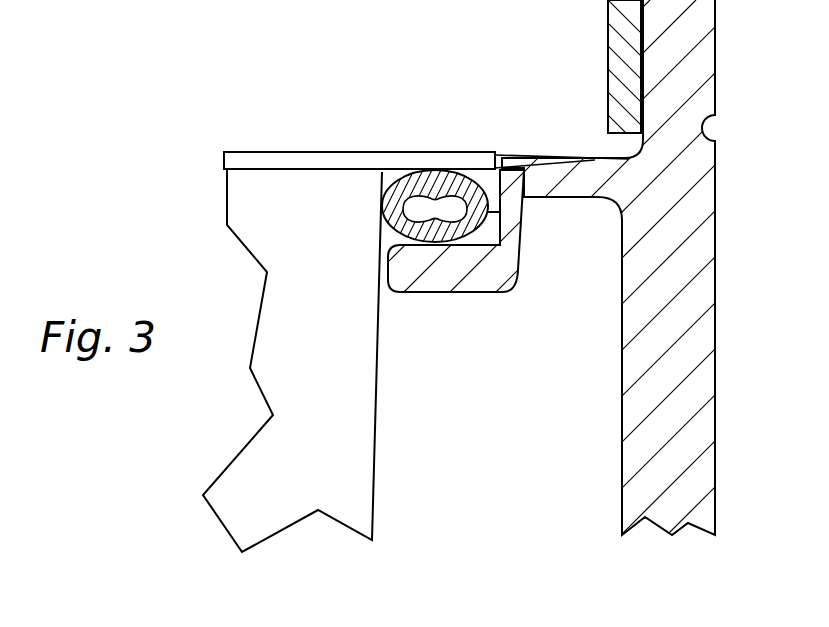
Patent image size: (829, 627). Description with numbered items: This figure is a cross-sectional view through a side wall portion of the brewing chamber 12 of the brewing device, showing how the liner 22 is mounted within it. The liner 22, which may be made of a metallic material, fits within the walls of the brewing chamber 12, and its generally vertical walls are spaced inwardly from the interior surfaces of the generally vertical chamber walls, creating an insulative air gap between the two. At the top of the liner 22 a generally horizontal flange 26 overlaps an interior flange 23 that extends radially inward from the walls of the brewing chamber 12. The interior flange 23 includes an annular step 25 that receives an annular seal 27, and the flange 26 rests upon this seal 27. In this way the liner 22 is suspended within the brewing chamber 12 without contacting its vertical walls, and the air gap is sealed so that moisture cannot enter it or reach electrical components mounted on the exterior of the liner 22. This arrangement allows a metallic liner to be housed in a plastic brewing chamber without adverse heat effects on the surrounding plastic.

The brewing chamber 12 is at (690, 355).
The liner 22 is at (358, 391).
The interior flange 23 is at (572, 197).
The annular step 25 is at (493, 247).
The horizontal flange 26 is at (440, 157).
The annular seal 27 is at (449, 232).